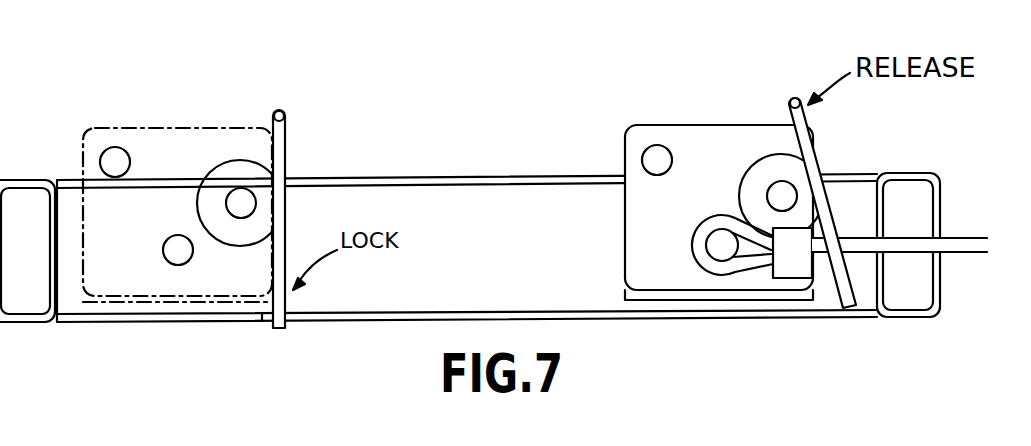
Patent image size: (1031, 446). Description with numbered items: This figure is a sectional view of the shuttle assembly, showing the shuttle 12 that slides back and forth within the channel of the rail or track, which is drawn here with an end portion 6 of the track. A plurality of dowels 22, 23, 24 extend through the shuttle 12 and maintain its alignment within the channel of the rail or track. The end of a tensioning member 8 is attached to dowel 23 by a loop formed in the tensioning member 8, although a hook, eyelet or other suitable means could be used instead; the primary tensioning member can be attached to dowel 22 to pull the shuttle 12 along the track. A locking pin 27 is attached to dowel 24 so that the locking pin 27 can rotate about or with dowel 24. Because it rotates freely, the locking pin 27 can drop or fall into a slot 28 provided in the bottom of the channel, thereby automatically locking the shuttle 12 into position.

The frame tube end cap 6 is at (27, 234).
The tensioning member 8 is at (980, 252).
The shuttle 12 is at (700, 125).
The dowel 22 is at (672, 160).
The dowel 23 is at (722, 245).
The dowel 24 is at (787, 197).
The locking pin 27 is at (288, 133).
The slot 28 is at (265, 325).